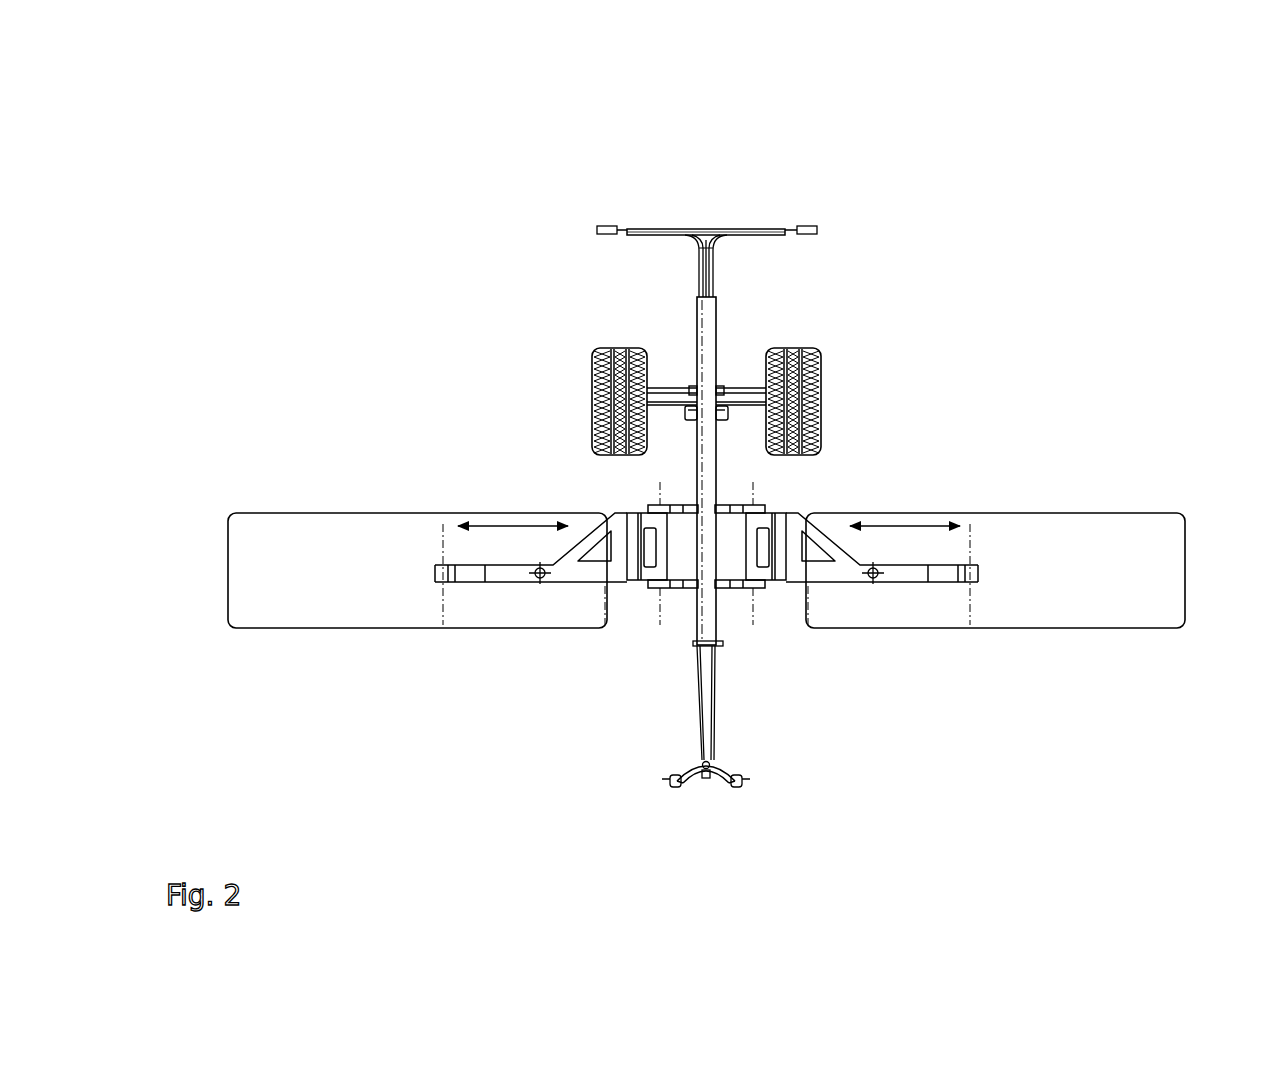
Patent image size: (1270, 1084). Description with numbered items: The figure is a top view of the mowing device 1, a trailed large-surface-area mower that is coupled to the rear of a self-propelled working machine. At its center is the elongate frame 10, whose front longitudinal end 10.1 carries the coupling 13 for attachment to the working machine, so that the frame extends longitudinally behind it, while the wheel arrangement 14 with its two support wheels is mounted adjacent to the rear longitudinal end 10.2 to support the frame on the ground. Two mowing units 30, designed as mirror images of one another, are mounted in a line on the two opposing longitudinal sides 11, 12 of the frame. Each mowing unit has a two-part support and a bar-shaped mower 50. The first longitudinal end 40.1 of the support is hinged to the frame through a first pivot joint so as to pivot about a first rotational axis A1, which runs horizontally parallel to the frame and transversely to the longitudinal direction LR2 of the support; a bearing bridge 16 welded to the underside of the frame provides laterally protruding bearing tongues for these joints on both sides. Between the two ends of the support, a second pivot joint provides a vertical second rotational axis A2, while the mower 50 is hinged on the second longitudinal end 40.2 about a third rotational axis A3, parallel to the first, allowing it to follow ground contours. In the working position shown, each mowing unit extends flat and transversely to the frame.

The mowing device 1 is at (1001, 208).
The frame 10 is at (708, 352).
The front longitudinal end 10.1 is at (686, 757).
The rear longitudinal end 10.2 is at (718, 304).
The longitudinal side 11 is at (695, 473).
The longitudinal side 12 is at (718, 473).
The coupling 13 is at (718, 786).
The wheel arrangement 14 is at (581, 372).
The bearing bridge 16 is at (647, 508).
The mowing unit 30 is at (330, 358).
The first longitudinal end 40.1 is at (636, 597).
The second longitudinal end 40.2 is at (435, 561).
The bar-shaped mower 50 is at (230, 511).
The first rotational axis A1 is at (660, 600).
The second rotational axis A2 is at (540, 583).
The third rotational axis A3 is at (444, 602).
The longitudinal direction of the support LR2 is at (513, 527).